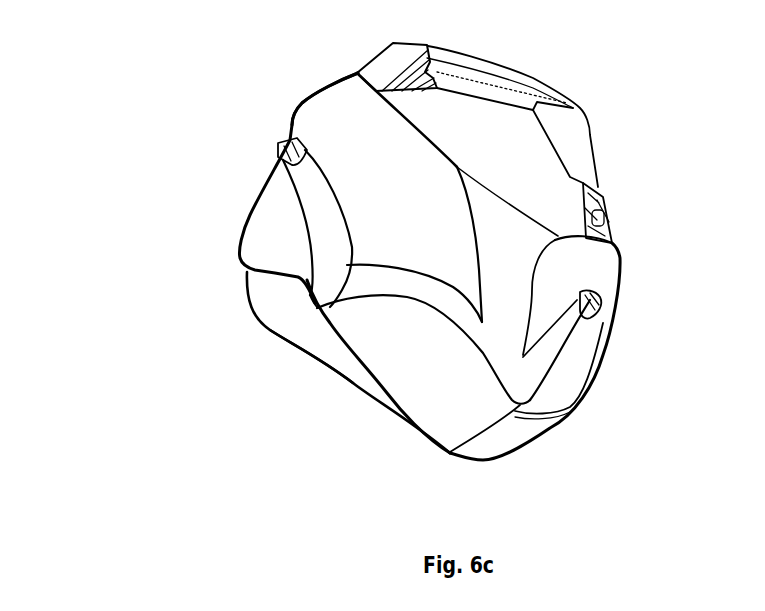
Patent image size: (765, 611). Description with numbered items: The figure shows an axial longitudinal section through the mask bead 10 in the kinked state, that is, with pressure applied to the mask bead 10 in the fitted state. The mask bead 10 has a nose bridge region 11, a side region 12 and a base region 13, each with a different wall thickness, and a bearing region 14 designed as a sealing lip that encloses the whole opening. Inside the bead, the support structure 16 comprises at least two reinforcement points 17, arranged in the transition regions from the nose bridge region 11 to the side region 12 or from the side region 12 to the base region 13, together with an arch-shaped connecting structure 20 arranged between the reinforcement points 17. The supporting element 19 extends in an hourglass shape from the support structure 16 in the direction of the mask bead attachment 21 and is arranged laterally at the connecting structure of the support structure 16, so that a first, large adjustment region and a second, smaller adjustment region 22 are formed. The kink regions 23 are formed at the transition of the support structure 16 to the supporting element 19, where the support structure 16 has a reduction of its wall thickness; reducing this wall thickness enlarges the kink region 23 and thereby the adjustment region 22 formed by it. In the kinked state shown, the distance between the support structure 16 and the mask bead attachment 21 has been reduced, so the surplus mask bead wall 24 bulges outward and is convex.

The mask bead 10 is at (236, 168).
The nose bridge region 11 is at (230, 297).
The side region 12 is at (402, 374).
The base region 13 is at (580, 418).
The bearing region 14 is at (330, 357).
The support structure 16 is at (293, 222).
The reinforcement points 17 is at (323, 300).
The supporting element 19 is at (513, 300).
The arch-shaped connecting structure 20 is at (417, 293).
The mask bead attachment 21 is at (369, 53).
The adjustment regions 22 is at (322, 130).
The kink regions 23 is at (472, 318).
The mask bead wall 24 is at (323, 87).